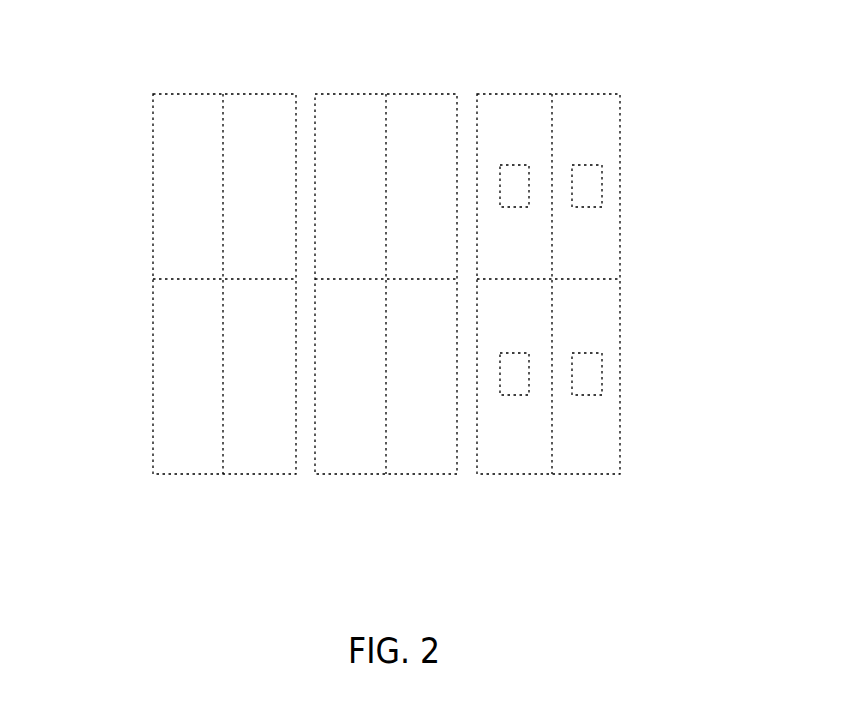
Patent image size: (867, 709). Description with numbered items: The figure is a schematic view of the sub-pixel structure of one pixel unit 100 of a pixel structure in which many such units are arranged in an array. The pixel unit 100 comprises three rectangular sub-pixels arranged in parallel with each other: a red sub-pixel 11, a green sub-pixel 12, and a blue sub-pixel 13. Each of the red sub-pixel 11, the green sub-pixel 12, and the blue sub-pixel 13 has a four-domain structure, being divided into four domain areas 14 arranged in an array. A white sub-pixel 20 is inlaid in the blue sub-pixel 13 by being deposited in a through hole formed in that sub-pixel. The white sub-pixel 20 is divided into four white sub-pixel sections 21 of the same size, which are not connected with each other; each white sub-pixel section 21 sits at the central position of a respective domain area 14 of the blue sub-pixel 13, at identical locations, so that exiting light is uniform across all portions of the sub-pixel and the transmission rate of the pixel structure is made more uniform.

The pixel unit 100 is at (405, 41).
The red sub-pixel 11 is at (570, 447).
The green sub-pixel 12 is at (406, 450).
The blue sub-pixel 13 is at (249, 451).
The domain area 14 is at (185, 238).
The white sub-pixel 20 is at (594, 182).
The white sub-pixel section 21 is at (583, 377).